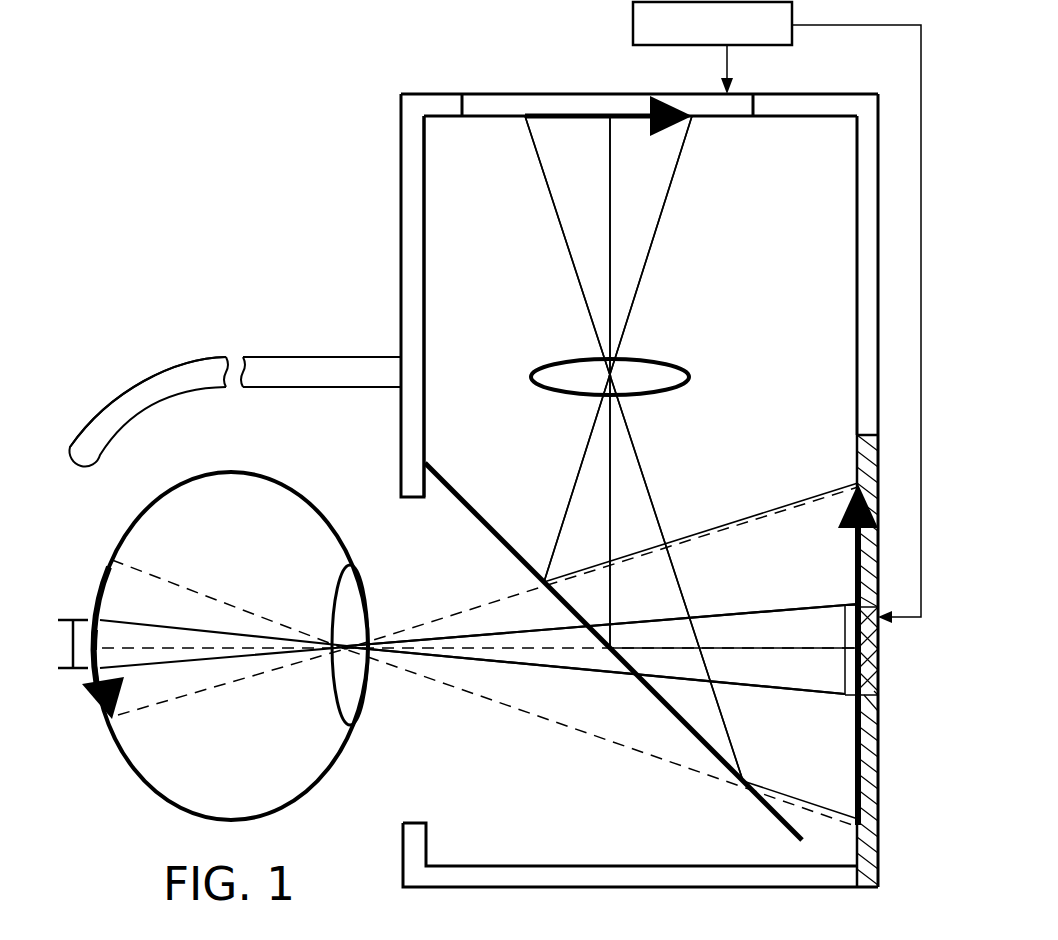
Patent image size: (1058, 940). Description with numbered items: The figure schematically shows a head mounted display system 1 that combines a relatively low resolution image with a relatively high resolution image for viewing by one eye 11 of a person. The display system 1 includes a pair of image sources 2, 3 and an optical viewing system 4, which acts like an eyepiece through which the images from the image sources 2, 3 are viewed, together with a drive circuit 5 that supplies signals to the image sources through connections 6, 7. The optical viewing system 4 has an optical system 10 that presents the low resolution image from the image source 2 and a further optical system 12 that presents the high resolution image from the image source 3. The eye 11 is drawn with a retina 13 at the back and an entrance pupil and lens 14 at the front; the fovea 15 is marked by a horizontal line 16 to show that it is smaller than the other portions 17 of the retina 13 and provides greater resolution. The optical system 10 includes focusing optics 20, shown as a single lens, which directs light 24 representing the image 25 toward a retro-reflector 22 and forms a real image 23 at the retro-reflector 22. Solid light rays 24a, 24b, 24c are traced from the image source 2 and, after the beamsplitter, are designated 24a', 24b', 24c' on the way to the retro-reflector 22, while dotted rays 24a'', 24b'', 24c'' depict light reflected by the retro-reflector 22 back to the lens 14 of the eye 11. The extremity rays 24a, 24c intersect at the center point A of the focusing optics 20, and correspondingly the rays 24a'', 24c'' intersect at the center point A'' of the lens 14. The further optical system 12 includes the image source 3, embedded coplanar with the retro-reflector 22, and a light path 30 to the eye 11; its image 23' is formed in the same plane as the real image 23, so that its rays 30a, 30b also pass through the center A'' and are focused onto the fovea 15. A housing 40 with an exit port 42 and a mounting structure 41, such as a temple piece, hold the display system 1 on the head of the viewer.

The display system 1 is at (248, 242).
The image source 2 is at (500, 93).
The image source 3 is at (882, 683).
The optical viewing system 4 is at (448, 292).
The drive circuit 5 is at (792, 14).
The connection 6 is at (727, 62).
The connection 7 is at (921, 78).
The optical system 10 is at (448, 346).
The eye 11 is at (233, 472).
The further optical system 12 is at (652, 792).
The retina 13 is at (92, 673).
The entrance pupil and lens 14 is at (370, 688).
The fovea 15 is at (97, 637).
The horizontal line 16 is at (70, 645).
The other portions of the retina 17 is at (108, 568).
The focusing optics 20 is at (704, 331).
The retro-reflector 22 is at (852, 452).
The real image 23 is at (837, 654).
The image 23' is at (827, 671).
The light 24 is at (536, 199).
The light ray 24a is at (627, 448).
The light ray 24b is at (560, 382).
The light ray 24c is at (631, 349).
The light ray 24a' is at (800, 783).
The light ray 24b' is at (734, 606).
The light ray 24c' is at (701, 532).
The light ray 24a'' is at (488, 738).
The light ray 24b'' is at (480, 673).
The light ray 24c'' is at (485, 568).
The image 25 is at (567, 118).
The light path 30 is at (659, 610).
The light ray 30a is at (618, 682).
The light ray 30b is at (497, 632).
The housing 40 is at (400, 213).
The mounting structure 41 is at (272, 364).
The exit port 42 is at (376, 508).
The center point A is at (638, 354).
The center point A'' is at (314, 684).